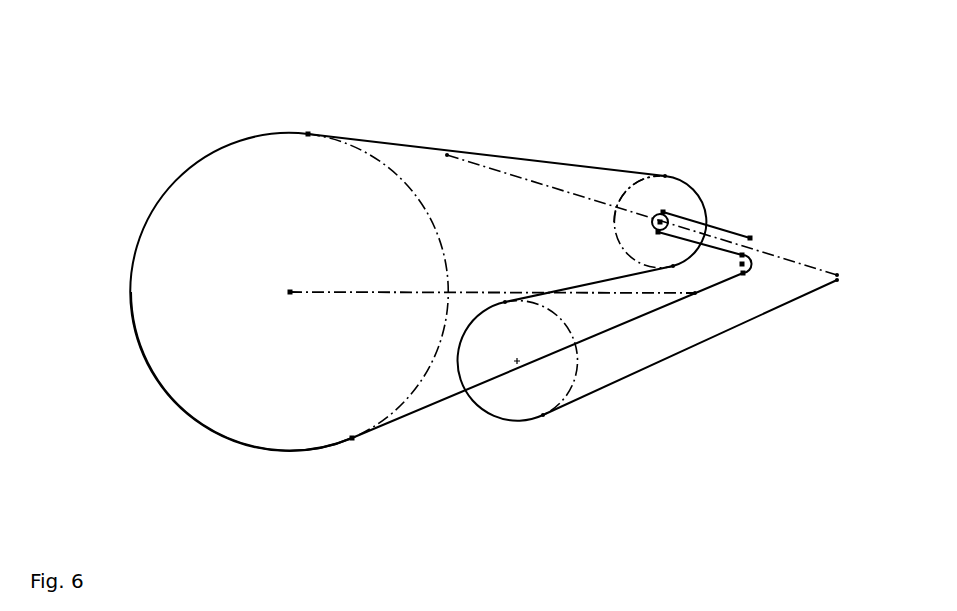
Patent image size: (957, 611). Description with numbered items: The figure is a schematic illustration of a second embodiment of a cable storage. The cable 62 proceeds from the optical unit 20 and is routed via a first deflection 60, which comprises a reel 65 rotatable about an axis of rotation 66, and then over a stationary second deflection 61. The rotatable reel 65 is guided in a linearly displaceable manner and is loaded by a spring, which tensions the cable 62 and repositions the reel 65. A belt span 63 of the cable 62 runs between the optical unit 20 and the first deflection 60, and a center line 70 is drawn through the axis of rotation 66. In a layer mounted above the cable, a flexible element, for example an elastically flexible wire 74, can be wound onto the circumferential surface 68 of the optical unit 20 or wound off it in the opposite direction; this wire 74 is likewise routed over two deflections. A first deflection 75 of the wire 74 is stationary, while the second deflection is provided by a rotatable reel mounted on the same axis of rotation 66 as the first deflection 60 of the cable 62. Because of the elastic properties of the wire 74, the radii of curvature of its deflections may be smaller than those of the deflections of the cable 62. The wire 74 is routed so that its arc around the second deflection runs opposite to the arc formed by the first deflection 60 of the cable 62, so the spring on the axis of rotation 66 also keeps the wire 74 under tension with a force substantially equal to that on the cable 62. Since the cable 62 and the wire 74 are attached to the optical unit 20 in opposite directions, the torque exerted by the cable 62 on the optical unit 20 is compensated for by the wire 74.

The optical unit 20 is at (164, 345).
The circumferential surface 68 is at (187, 417).
The first deflection 60 is at (688, 163).
The stationary second deflection 61 is at (532, 442).
The cable 62 is at (533, 155).
The belt span 63 is at (502, 129).
The reel 65 is at (655, 192).
The axis of rotation 66 is at (667, 218).
The arm center line 70 is at (563, 192).
The elastically flexible wire 74 is at (675, 303).
The first deflection of the wire 75 is at (752, 290).